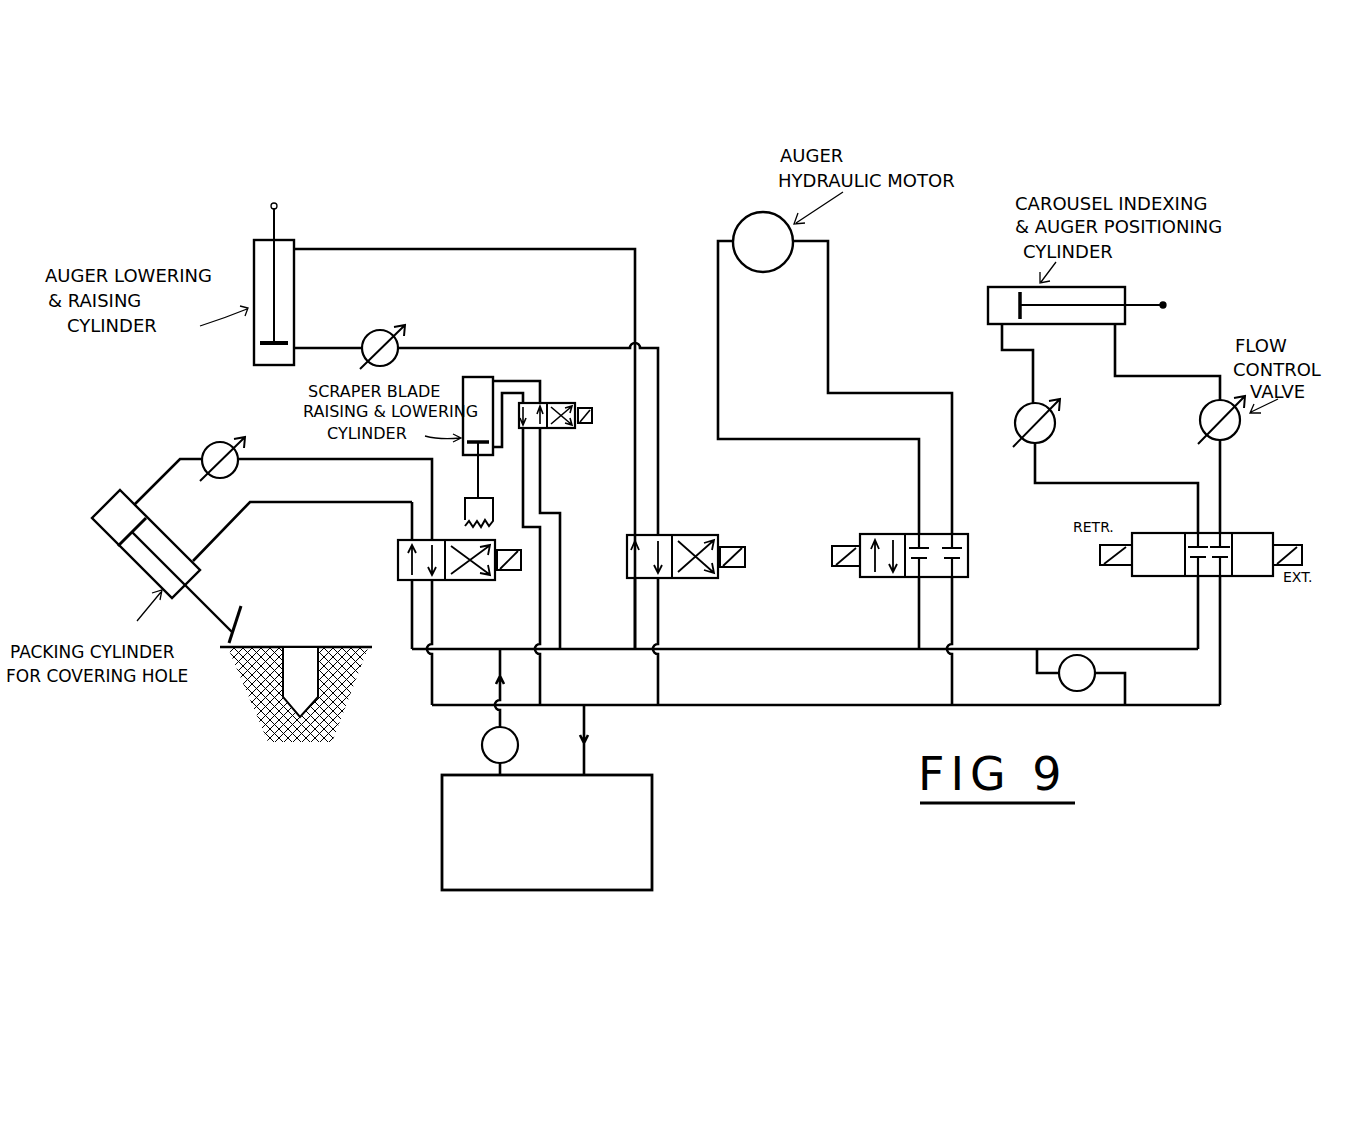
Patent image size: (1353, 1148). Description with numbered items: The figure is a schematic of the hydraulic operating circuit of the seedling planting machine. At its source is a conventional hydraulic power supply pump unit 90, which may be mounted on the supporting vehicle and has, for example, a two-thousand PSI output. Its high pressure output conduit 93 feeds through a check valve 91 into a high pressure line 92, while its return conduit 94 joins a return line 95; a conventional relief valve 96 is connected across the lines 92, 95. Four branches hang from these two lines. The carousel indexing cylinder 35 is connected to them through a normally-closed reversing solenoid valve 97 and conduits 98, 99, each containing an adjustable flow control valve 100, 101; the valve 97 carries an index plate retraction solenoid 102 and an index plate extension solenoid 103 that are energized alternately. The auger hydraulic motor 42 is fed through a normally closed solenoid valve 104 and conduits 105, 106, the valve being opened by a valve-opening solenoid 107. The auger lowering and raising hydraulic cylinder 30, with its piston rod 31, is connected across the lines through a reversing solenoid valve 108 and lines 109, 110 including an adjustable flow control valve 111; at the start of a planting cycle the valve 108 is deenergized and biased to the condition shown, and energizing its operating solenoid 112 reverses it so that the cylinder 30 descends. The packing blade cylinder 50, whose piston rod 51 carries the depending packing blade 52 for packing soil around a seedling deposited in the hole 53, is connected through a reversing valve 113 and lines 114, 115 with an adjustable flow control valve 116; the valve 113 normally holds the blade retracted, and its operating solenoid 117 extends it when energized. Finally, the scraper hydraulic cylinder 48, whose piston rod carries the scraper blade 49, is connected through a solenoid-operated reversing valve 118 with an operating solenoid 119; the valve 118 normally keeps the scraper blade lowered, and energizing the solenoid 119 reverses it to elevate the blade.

The hydraulic cylinder 30 is at (294, 300).
The piston rod 31 is at (278, 227).
The carousel indexing cylinder 35 is at (1086, 286).
The hydraulic motor 42 is at (751, 276).
The scraper hydraulic cylinder 48 is at (492, 378).
The scraper blade 49 is at (484, 520).
The packing blade cylinder 50 is at (143, 544).
The piston rod 51 is at (214, 596).
The packing blade 52 is at (245, 614).
The hole 53 is at (314, 660).
The hydraulic power supply pump unit 90 is at (655, 836).
The check valve 91 is at (480, 745).
The high pressure line 92 is at (471, 648).
The high pressure output conduit 93 is at (503, 722).
The return conduit 94 is at (590, 758).
The return line 95 is at (713, 707).
The relief valve 96 is at (1057, 676).
The reversing solenoid valve 97 is at (1265, 587).
The conduit 98 is at (1060, 482).
The conduit 99 is at (1226, 480).
The adjustable flow control valve 100 is at (1056, 434).
The adjustable flow control valve 101 is at (1242, 428).
The index plate retraction solenoid 102 is at (1118, 556).
The index plate extension solenoid 103 is at (1280, 545).
The solenoid valve 104 is at (905, 532).
The conduit 105 is at (750, 441).
The conduit 106 is at (862, 392).
The valve-opening solenoid 107 is at (845, 568).
The reversing solenoid valve 108 is at (690, 580).
The line 109 is at (548, 250).
The line 110 is at (472, 348).
The adjustable flow control valve 111 is at (383, 330).
The operating solenoid 112 is at (738, 538).
The reversing valve 113 is at (398, 570).
The line 114 is at (299, 504).
The line 115 is at (263, 457).
The adjustable flow control valve 116 is at (213, 442).
The operating solenoid 117 is at (503, 572).
The solenoid-operated reversing valve 118 is at (555, 402).
The operating solenoid 119 is at (590, 412).